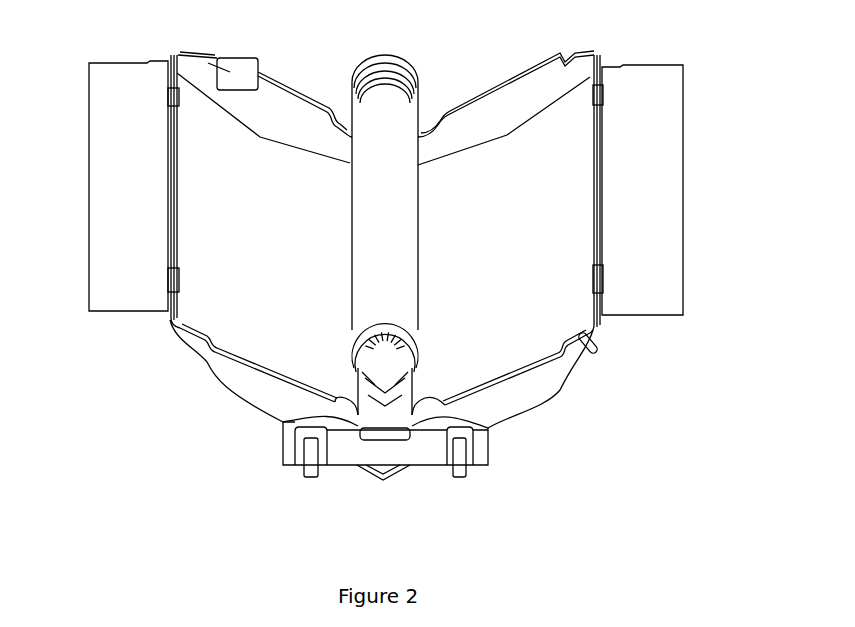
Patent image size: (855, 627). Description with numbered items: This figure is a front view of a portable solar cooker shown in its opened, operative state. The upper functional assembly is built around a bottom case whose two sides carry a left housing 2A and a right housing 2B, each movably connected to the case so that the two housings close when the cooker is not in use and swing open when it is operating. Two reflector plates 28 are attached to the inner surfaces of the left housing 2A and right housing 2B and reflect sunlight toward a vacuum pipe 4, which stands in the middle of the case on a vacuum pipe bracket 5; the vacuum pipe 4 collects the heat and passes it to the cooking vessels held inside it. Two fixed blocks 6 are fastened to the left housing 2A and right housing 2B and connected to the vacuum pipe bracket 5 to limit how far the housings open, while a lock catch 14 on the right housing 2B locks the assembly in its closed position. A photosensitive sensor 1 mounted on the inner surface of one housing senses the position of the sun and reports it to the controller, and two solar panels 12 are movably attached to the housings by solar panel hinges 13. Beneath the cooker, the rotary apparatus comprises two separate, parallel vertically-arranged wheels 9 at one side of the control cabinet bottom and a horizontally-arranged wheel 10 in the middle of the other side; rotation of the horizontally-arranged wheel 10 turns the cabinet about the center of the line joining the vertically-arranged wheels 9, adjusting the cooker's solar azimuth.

The photosensitive sensor 1 is at (178, 55).
The left housing 2A is at (240, 372).
The right housing 2B is at (527, 377).
The vacuum pipe 4 is at (370, 270).
The vacuum pipe bracket 5 is at (383, 393).
The fixed block 6 is at (360, 415).
The vertically-arranged wheel 9 is at (305, 477).
The horizontally-arranged wheel 10 is at (383, 478).
The solar panel 12 is at (652, 110).
The solar panel hinge 13 is at (604, 275).
The lock catch 14 is at (603, 337).
The reflector plate 28 is at (245, 170).